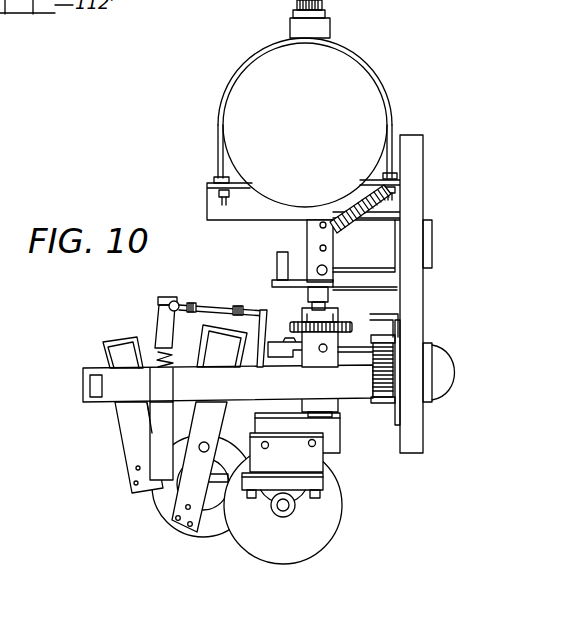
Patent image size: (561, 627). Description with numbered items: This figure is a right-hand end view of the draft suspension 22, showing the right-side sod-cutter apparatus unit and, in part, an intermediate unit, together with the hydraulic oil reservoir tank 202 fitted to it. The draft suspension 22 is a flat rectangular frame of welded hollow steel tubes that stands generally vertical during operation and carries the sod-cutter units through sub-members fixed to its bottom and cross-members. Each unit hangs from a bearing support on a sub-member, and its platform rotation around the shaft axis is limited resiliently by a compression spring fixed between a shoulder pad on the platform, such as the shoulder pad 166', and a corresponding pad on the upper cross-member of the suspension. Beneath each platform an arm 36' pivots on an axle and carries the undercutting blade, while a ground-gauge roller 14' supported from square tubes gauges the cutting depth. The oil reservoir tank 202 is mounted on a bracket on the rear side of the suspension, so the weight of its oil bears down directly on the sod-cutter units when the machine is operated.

The oil reservoir tank 202 is at (302, 48).
The draft suspension 22 is at (415, 170).
The shoulder pad 166' is at (436, 407).
The arm 36' is at (102, 447).
The ground-surface gauge roller 14' is at (181, 486).